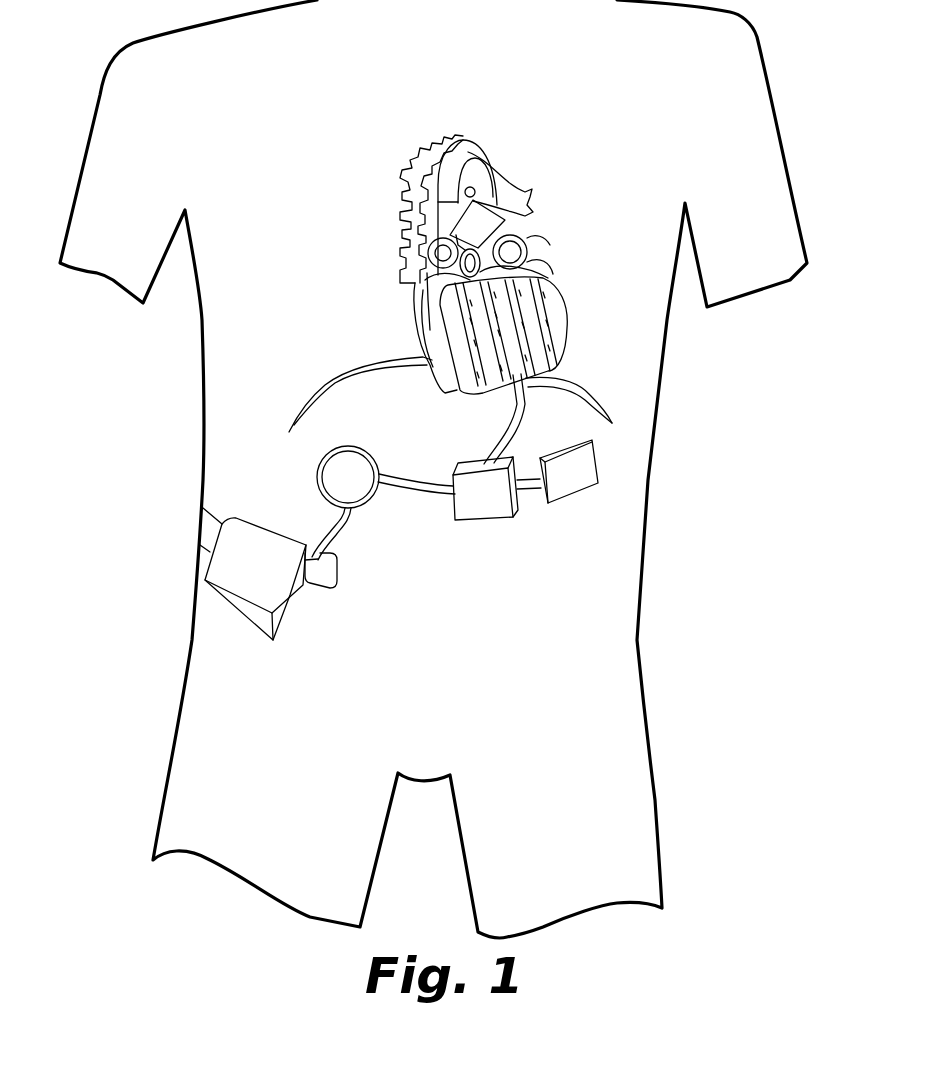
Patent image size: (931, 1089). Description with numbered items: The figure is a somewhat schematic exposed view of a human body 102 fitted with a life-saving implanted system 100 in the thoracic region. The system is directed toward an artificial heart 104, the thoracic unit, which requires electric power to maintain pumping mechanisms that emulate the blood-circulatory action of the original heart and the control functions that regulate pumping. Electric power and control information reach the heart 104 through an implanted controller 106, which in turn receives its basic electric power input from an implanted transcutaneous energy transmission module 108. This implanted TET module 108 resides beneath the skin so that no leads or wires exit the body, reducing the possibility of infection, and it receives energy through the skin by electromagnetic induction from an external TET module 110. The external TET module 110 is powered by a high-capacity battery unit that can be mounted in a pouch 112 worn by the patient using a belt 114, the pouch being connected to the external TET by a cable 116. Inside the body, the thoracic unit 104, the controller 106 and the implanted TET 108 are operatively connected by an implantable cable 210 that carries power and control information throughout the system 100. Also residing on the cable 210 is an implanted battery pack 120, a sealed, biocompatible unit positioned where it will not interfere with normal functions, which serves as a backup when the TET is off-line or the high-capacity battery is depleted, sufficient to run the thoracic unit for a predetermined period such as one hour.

The implanted system 100 is at (622, 427).
The human body 102 is at (670, 334).
The artificial heart 104 is at (556, 286).
The implanted controller 106 is at (492, 506).
The implanted transcutaneous energy transmission module 108 is at (377, 456).
The external TET module 110 is at (336, 447).
The pouch 112 is at (297, 606).
The belt 114 is at (334, 578).
The cable 116 is at (348, 523).
The implanted battery pack 120 is at (583, 490).
The implantable cable 210 is at (423, 480).